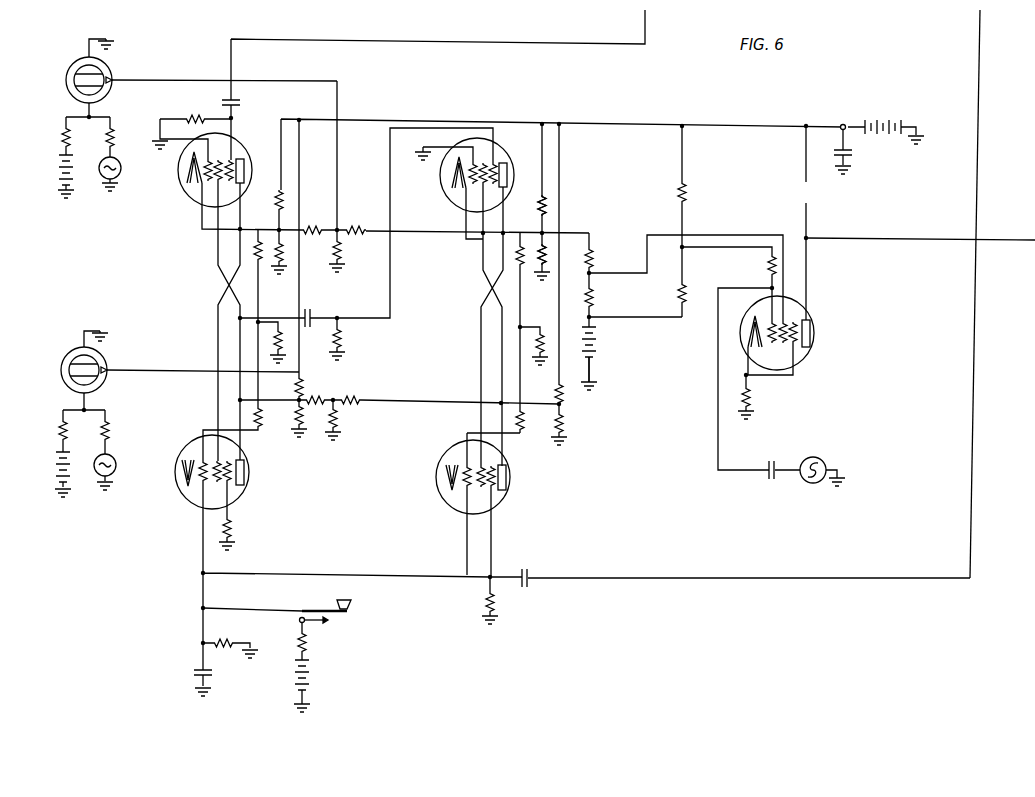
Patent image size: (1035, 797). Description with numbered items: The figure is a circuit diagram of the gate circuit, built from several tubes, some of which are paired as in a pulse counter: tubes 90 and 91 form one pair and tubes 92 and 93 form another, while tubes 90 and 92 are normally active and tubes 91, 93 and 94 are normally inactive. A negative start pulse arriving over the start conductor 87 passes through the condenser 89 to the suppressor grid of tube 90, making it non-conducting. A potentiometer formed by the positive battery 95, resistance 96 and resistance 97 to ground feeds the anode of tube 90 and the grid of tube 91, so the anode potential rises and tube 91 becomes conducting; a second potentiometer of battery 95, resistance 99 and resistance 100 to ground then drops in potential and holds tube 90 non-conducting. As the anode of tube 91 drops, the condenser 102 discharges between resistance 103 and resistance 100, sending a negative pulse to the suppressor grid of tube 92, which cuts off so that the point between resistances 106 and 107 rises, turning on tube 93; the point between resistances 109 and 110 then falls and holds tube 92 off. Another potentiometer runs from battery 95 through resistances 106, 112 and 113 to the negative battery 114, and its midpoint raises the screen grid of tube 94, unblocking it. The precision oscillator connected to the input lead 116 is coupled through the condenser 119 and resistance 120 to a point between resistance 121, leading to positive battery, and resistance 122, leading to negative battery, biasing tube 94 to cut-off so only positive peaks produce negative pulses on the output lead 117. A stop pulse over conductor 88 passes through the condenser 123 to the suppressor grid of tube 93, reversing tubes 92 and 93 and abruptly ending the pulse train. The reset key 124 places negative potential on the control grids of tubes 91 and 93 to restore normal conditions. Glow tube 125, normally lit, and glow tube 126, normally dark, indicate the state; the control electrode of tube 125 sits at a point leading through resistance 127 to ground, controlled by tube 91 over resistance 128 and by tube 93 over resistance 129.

The start conductor 87 is at (645, 18).
The stop conductor 88 is at (979, 25).
The condenser 89 is at (240, 104).
The tube 90 is at (178, 186).
The tube 91 is at (183, 498).
The tube 92 is at (440, 193).
The tube 93 is at (437, 497).
The tube 94 is at (813, 356).
The positive battery 95 is at (880, 140).
The resistance 96 is at (288, 201).
The resistance 97 is at (287, 251).
The resistance 99 is at (301, 381).
The resistance 100 is at (290, 415).
The condenser 102 is at (309, 310).
The resistance 103 is at (342, 333).
The resistance 106 is at (552, 205).
The resistance 107 is at (550, 250).
The resistance 109 is at (565, 393).
The resistance 110 is at (565, 422).
The resistance 112 is at (597, 258).
The resistance 113 is at (597, 297).
The negative battery 114 is at (600, 347).
The input lead 116 is at (869, 473).
The output lead 117 is at (1031, 241).
The condenser 119 is at (768, 482).
The resistance 120 is at (769, 267).
The resistance 121 is at (692, 191).
The resistance 122 is at (689, 300).
The condenser 123 is at (529, 566).
The reset key 124 is at (345, 616).
The glow tube 125 is at (106, 383).
The glow tube 126 is at (111, 65).
The resistance 127 is at (343, 419).
The resistance 128 is at (333, 400).
The resistance 129 is at (350, 400).